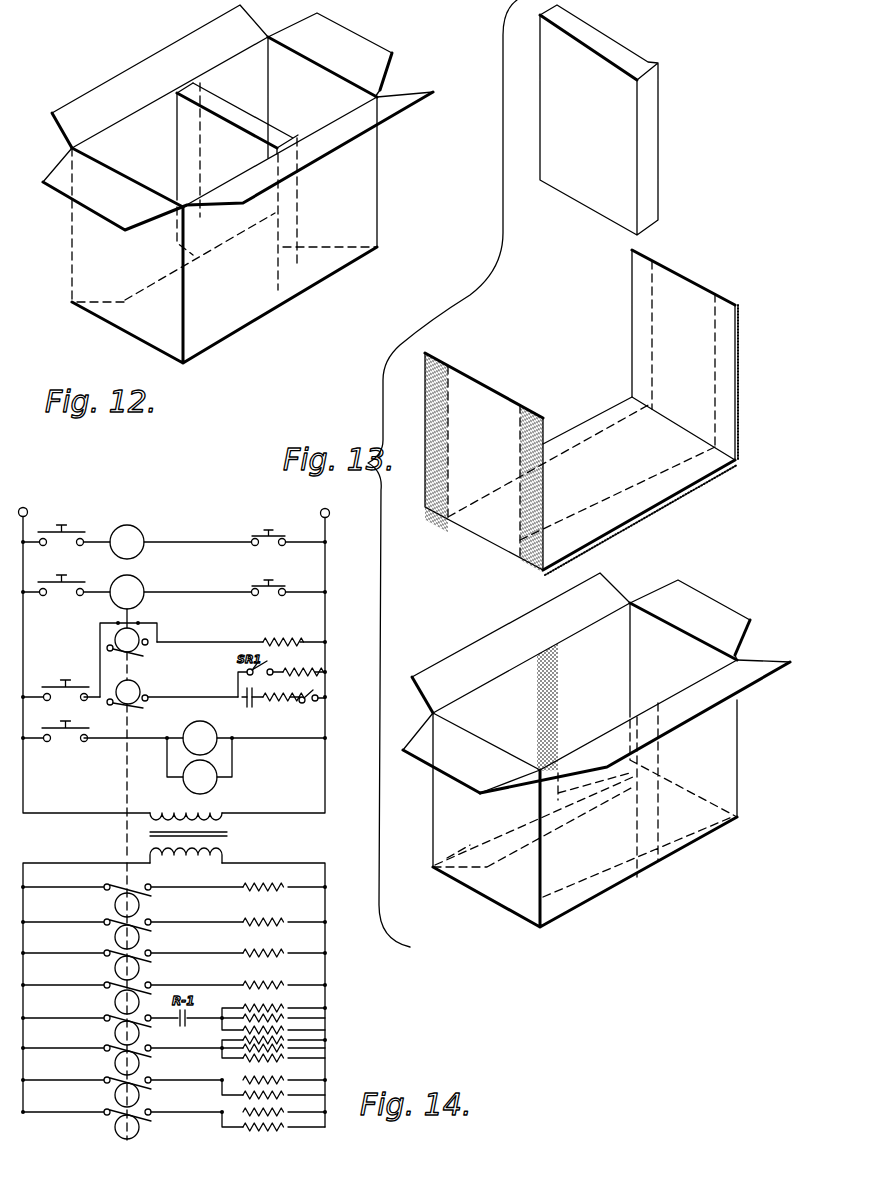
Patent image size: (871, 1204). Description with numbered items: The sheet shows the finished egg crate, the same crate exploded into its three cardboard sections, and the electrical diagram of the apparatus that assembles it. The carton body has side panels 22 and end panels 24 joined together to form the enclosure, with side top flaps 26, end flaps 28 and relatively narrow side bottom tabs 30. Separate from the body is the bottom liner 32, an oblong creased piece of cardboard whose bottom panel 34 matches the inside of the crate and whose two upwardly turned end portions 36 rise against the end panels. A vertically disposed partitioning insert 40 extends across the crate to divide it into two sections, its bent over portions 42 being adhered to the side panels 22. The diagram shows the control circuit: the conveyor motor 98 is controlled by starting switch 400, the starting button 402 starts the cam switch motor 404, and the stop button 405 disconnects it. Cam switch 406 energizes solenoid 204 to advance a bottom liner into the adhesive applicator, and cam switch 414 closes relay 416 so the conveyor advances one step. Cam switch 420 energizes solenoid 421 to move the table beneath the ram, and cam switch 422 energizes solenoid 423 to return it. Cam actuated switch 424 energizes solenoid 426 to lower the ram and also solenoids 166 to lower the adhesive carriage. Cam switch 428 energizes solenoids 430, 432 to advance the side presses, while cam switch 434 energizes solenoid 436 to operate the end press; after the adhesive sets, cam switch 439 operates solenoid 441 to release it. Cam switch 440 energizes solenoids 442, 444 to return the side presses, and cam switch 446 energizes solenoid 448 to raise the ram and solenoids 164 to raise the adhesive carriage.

In FIG. 13, the side panel 22 is at (675, 810).
In FIG. 13, the end panel 24 is at (502, 885).
In FIG. 13, the side top flap 26 is at (488, 618).
In FIG. 13, the end flap 28 is at (708, 615).
In FIG. 13, the side bottom tab 30 is at (448, 883).
In FIG. 13, the bottom liner 32 is at (690, 501).
In FIG. 13, the bottom liner bottom panel 34 is at (578, 457).
In FIG. 13, the upwardly turned end portion 36 is at (493, 407).
In FIG. 12, the partitioning insert 40 is at (222, 135).
In FIG. 13, the partitioning insert 40 is at (600, 70).
In FIG. 12, the bent over portion 42 is at (195, 81).
In FIG. 14, the conveyor motor 98 is at (130, 540).
In FIG. 14, the starting switch 400 is at (77, 533).
In FIG. 14, the starting button 402 is at (61, 575).
In FIG. 14, the cam switch motor 404 is at (135, 588).
In FIG. 14, the stop button 405 is at (280, 578).
In FIG. 14, the cam switch 406 is at (150, 627).
In FIG. 14, the solenoid 204 is at (290, 643).
In FIG. 14, the cam switch 414 is at (168, 670).
In FIG. 14, the relay 416 is at (295, 705).
In FIG. 14, the cam switch 420 is at (110, 884).
In FIG. 14, the solenoid 421 is at (273, 883).
In FIG. 14, the cam switch 422 is at (110, 918).
In FIG. 14, the solenoid 423 is at (277, 922).
In FIG. 14, the cam switch 434 is at (110, 950).
In FIG. 14, the solenoid 436 is at (277, 952).
In FIG. 14, the cam switch 439 is at (132, 975).
In FIG. 14, the solenoid 441 is at (277, 987).
In FIG. 14, the cam switch 446 is at (117, 991).
In FIG. 14, the solenoid 426 is at (290, 1007).
In FIG. 14, the solenoid 166 is at (290, 1018).
In FIG. 14, the solenoid 448 is at (290, 1029).
In FIG. 14, the cam actuated switch 424 is at (113, 1022).
In FIG. 14, the solenoid 164 is at (290, 1040).
In FIG. 14, the solenoid 430 is at (290, 1057).
In FIG. 14, the solenoid 432 is at (290, 1081).
In FIG. 14, the solenoid 442 is at (290, 1096).
In FIG. 14, the cam switch 428 is at (115, 1085).
In FIG. 14, the solenoid 444 is at (290, 1128).
In FIG. 14, the cam switch 440 is at (110, 1117).